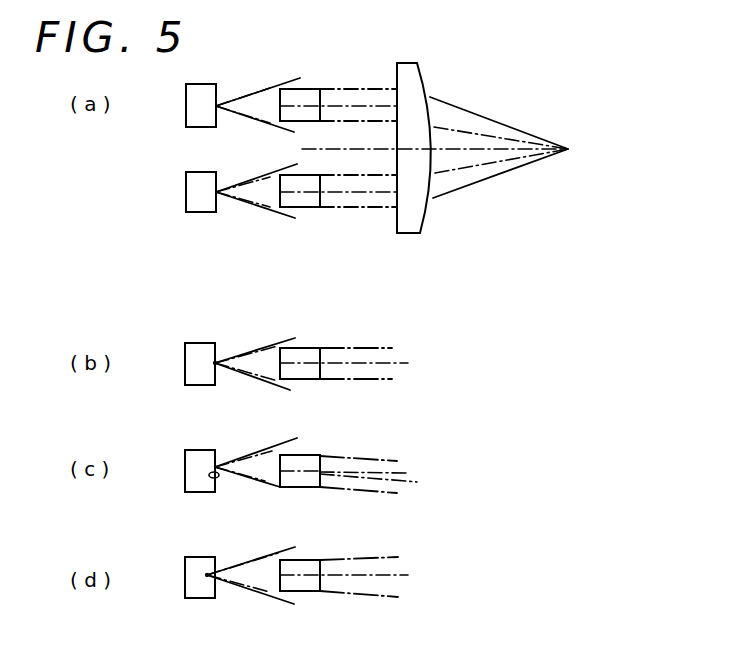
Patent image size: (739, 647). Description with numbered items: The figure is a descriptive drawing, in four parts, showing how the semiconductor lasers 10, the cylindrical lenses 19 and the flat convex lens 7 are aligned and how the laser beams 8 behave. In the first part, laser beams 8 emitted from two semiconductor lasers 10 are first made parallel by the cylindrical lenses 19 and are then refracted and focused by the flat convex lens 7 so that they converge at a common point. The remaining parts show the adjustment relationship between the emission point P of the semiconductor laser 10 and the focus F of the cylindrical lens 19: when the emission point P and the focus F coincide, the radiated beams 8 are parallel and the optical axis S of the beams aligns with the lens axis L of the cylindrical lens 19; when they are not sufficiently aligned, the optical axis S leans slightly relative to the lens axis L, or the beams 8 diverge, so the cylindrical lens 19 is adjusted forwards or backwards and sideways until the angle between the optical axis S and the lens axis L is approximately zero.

The flat convex lens 7 is at (419, 208).
The laser beams 8 is at (267, 87).
The semiconductor laser 10 is at (199, 213).
The cylindrical lens 19 is at (311, 208).
The optical axis S is at (314, 105).
The lens axis L is at (367, 105).
The emission point P is at (215, 358).
The focus F is at (217, 357).